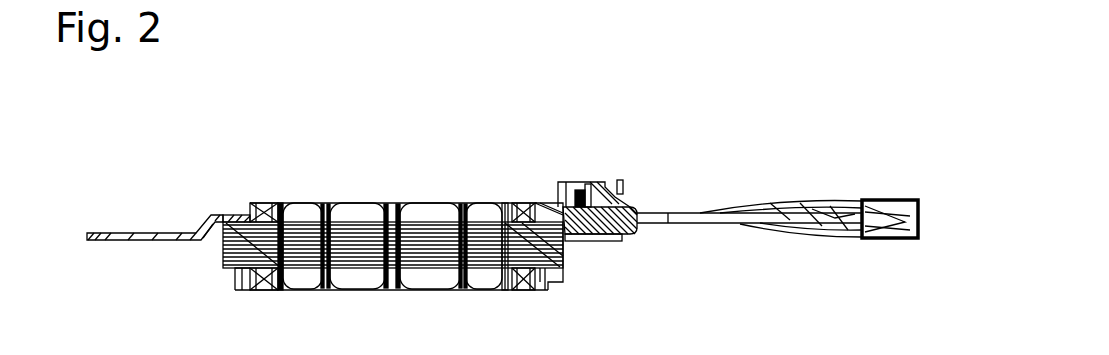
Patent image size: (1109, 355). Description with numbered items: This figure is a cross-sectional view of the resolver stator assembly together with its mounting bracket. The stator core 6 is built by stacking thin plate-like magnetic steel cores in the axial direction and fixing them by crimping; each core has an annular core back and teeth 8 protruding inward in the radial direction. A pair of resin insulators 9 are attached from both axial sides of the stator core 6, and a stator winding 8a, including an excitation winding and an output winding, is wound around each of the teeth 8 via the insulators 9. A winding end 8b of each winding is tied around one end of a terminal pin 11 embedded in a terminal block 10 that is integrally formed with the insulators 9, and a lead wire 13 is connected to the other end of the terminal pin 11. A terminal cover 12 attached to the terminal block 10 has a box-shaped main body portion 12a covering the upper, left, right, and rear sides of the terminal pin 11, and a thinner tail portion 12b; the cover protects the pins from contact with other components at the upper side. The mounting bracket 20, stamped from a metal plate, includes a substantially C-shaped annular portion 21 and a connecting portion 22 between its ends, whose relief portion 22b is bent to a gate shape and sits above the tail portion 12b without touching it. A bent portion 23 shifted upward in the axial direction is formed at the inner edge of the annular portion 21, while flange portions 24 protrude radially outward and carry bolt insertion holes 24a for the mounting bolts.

The stator core 6 is at (557, 280).
The teeth 8 is at (372, 262).
The stator winding 8a is at (262, 203).
The winding end 8b is at (576, 203).
The insulators 9 is at (355, 212).
The terminal block 10 is at (636, 226).
The terminal pin 11 is at (583, 185).
The terminal cover 12 is at (592, 181).
The main body portion 12a is at (577, 195).
The tail portion 12b is at (637, 194).
The lead wire 13 is at (787, 211).
The mounting bracket 20 is at (232, 209).
The annular portion 21 is at (200, 244).
The connecting portion 22 is at (588, 248).
The relief portion 22b is at (623, 180).
The bent portion 23 is at (222, 211).
The flange portions 24 is at (168, 233).
The bolt insertion holes 24a is at (113, 233).